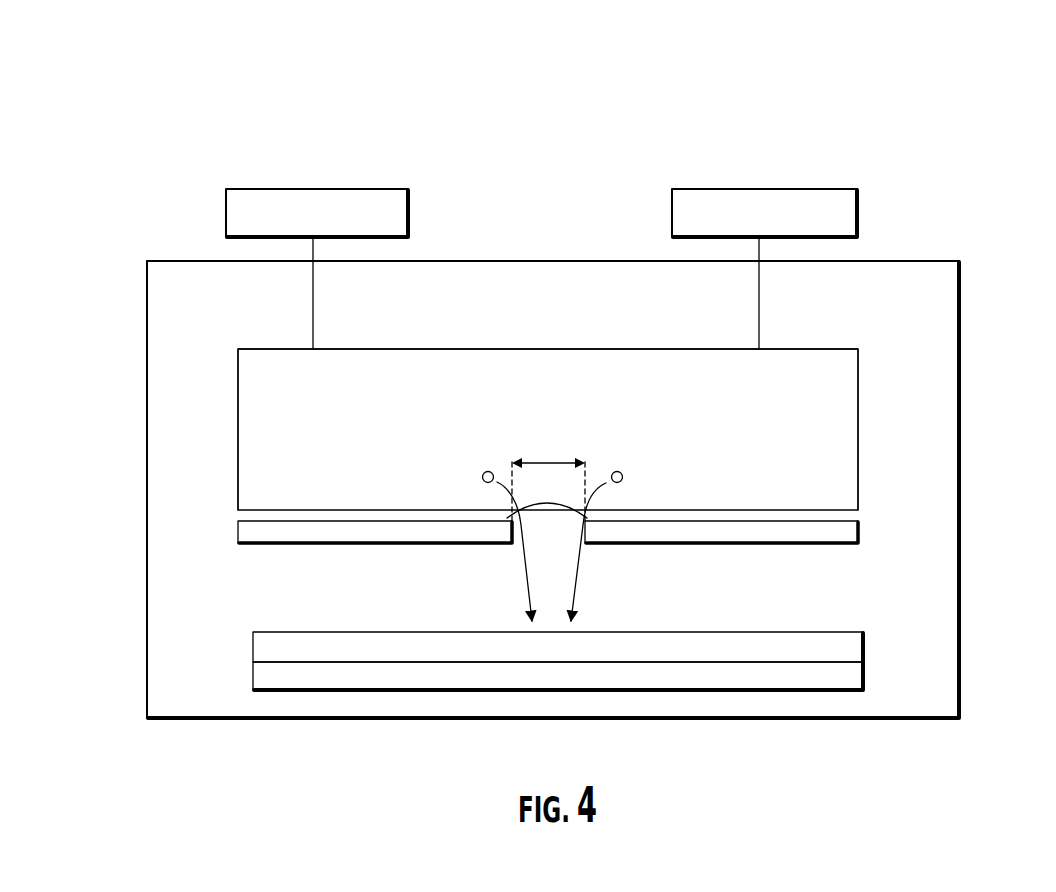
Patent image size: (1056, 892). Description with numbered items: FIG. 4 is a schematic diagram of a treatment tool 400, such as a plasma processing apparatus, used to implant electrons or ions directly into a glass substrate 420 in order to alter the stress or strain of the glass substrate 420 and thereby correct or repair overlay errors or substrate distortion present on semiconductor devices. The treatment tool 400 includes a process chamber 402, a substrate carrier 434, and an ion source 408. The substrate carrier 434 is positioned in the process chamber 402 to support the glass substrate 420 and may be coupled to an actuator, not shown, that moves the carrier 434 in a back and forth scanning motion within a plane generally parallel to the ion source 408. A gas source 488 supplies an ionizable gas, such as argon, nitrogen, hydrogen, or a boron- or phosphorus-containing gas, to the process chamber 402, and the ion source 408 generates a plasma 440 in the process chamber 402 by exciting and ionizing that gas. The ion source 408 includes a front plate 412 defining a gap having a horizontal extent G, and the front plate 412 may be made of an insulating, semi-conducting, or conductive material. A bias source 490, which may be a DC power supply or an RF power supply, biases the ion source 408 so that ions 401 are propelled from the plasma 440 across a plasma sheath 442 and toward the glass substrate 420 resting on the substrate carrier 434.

The treatment tool 400 is at (140, 127).
The process chamber 402 is at (960, 292).
The bias source 490 is at (305, 189).
The gas source 488 is at (753, 189).
The ion source 408 is at (256, 349).
The plasma 440 is at (319, 402).
The front plate 412 is at (238, 532).
The ions 401 is at (485, 470).
The horizontal extent G is at (548, 477).
The plasma sheath 442 is at (553, 514).
The glass substrate 420 is at (253, 644).
The substrate carrier 434 is at (253, 679).